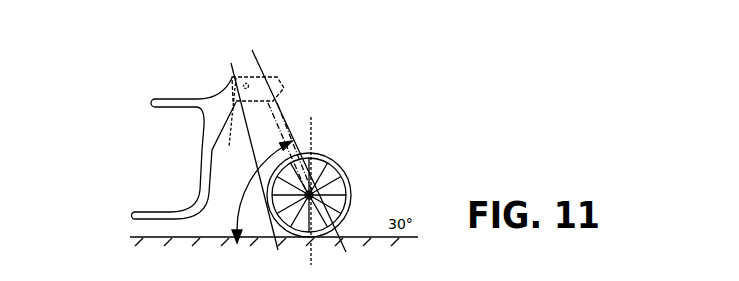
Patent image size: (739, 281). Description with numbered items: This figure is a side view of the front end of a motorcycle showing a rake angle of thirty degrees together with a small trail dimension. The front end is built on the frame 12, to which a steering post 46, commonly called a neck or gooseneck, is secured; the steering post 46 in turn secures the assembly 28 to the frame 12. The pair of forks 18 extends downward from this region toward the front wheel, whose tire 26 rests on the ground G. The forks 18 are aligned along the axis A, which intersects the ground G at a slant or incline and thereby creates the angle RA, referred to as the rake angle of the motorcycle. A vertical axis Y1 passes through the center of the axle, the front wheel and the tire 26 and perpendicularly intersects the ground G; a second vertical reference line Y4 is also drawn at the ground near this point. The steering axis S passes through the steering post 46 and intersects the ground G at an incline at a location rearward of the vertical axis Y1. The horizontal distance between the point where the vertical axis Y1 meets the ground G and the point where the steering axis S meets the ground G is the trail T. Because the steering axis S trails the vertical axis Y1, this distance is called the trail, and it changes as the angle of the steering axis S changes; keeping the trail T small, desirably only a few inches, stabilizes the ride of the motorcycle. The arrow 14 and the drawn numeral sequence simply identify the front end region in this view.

The frame 12 is at (207, 97).
The front wheel assembly 14 is at (345, 109).
The forks 18 is at (284, 102).
The tire 26 is at (345, 178).
The assembly 28 is at (277, 60).
The steering post 46 is at (228, 121).
The axis A- A is at (301, 150).
The steering axis S- S is at (253, 159).
The ground G is at (382, 238).
The trail T is at (293, 247).
The vertical axis Y1- Y1 is at (311, 166).
The vertical reference line Y4 is at (310, 262).
The rake angle RA is at (253, 192).